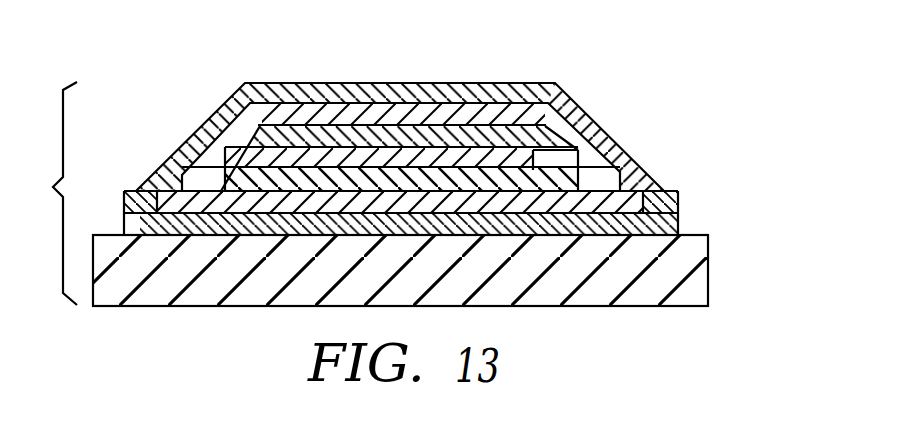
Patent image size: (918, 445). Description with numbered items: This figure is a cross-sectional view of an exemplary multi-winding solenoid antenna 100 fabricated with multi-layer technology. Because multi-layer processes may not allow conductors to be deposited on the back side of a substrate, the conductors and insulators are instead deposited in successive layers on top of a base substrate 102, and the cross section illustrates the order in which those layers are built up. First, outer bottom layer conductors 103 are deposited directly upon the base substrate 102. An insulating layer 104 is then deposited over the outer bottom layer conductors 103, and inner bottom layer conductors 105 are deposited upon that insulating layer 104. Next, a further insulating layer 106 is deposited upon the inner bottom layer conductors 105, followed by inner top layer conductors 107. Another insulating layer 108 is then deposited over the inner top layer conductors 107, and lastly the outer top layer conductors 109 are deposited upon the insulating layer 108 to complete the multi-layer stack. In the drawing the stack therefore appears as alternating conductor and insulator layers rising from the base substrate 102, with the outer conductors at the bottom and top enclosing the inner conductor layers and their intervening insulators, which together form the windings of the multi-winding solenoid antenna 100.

The multi-winding solenoid antenna 100 is at (38, 193).
The base substrate 102 is at (698, 282).
The outer bottom layer conductors 103 is at (592, 228).
The insulating layer 104 is at (627, 203).
The inner bottom layer conductors 105 is at (523, 176).
The insulating layer 106 is at (535, 150).
The inner top layer conductors 107 is at (500, 140).
The insulating layer 108 is at (416, 118).
The outer top layer conductors 109 is at (348, 95).